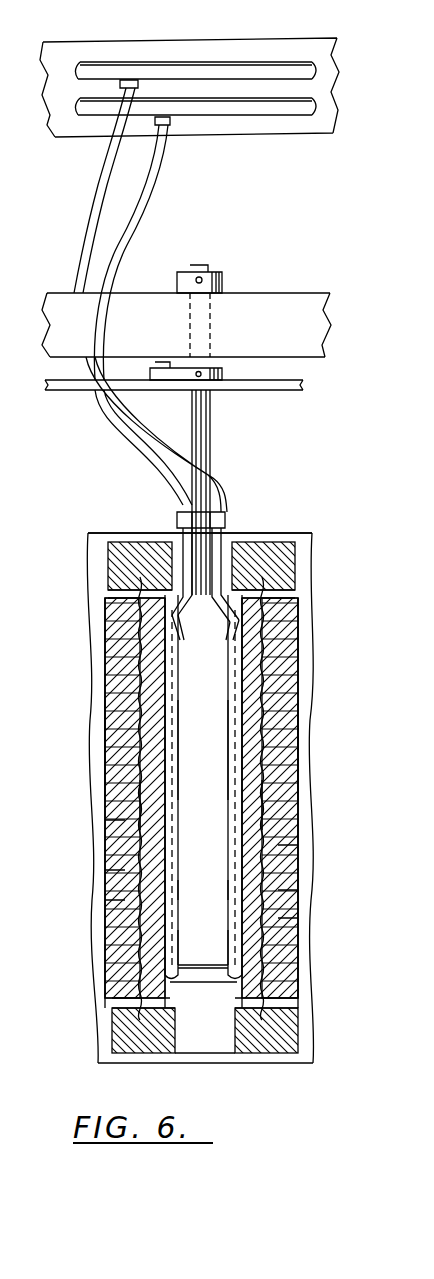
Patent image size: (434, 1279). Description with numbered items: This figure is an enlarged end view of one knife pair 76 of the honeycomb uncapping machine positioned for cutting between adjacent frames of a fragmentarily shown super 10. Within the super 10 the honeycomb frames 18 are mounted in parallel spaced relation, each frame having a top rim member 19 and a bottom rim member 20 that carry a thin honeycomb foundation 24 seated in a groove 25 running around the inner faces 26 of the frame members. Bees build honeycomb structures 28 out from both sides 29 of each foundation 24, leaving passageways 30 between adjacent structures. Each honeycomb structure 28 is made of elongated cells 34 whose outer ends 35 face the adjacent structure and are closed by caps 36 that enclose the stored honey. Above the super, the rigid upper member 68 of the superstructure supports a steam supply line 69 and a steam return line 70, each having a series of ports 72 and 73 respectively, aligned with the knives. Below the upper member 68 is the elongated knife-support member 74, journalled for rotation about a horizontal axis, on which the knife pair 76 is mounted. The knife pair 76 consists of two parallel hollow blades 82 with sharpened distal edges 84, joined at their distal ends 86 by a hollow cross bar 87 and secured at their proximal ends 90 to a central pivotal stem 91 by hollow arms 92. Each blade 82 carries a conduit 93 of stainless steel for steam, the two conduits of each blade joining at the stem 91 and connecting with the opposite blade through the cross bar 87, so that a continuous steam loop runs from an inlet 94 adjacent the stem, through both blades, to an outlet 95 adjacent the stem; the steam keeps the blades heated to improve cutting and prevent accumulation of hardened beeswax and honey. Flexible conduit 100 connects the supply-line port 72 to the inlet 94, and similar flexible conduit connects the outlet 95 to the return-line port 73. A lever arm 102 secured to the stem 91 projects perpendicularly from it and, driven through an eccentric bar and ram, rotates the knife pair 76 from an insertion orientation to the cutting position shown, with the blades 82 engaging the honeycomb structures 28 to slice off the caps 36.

The super 10 is at (323, 521).
The honeycomb frames 18 is at (106, 524).
The top rim member 19 is at (115, 558).
The bottom rim member 20 is at (130, 1040).
The honeycomb foundation 24 is at (140, 812).
The groove 25 is at (118, 585).
The inner faces 26 is at (110, 612).
The honeycomb structures 28 is at (101, 755).
The sides 29 is at (140, 745).
The passageways 30 is at (222, 1035).
The cells 34 is at (115, 820).
The outer ends 35 is at (115, 875).
The caps 36 is at (112, 900).
The upper member 68 is at (322, 42).
The steam supply line 69 is at (282, 62).
The steam return line 70 is at (282, 105).
The supply-line ports 72 is at (132, 80).
The return-line ports 73 is at (168, 125).
The knife-support member 74 is at (318, 293).
The knife pair 76 is at (218, 732).
The blades 82 is at (232, 833).
The distal edges 84 is at (232, 990).
The distal ends 86 is at (226, 975).
The cross bar 87 is at (214, 965).
The proximal ends 90 is at (178, 625).
The pivotal stem 91 is at (205, 428).
The hollow arms 92 is at (224, 580).
The conduit 93 is at (230, 893).
The inlet 94 is at (183, 560).
The outlet 95 is at (222, 600).
The flexible hoses 100 is at (140, 408).
The lever arms 102 is at (172, 368).